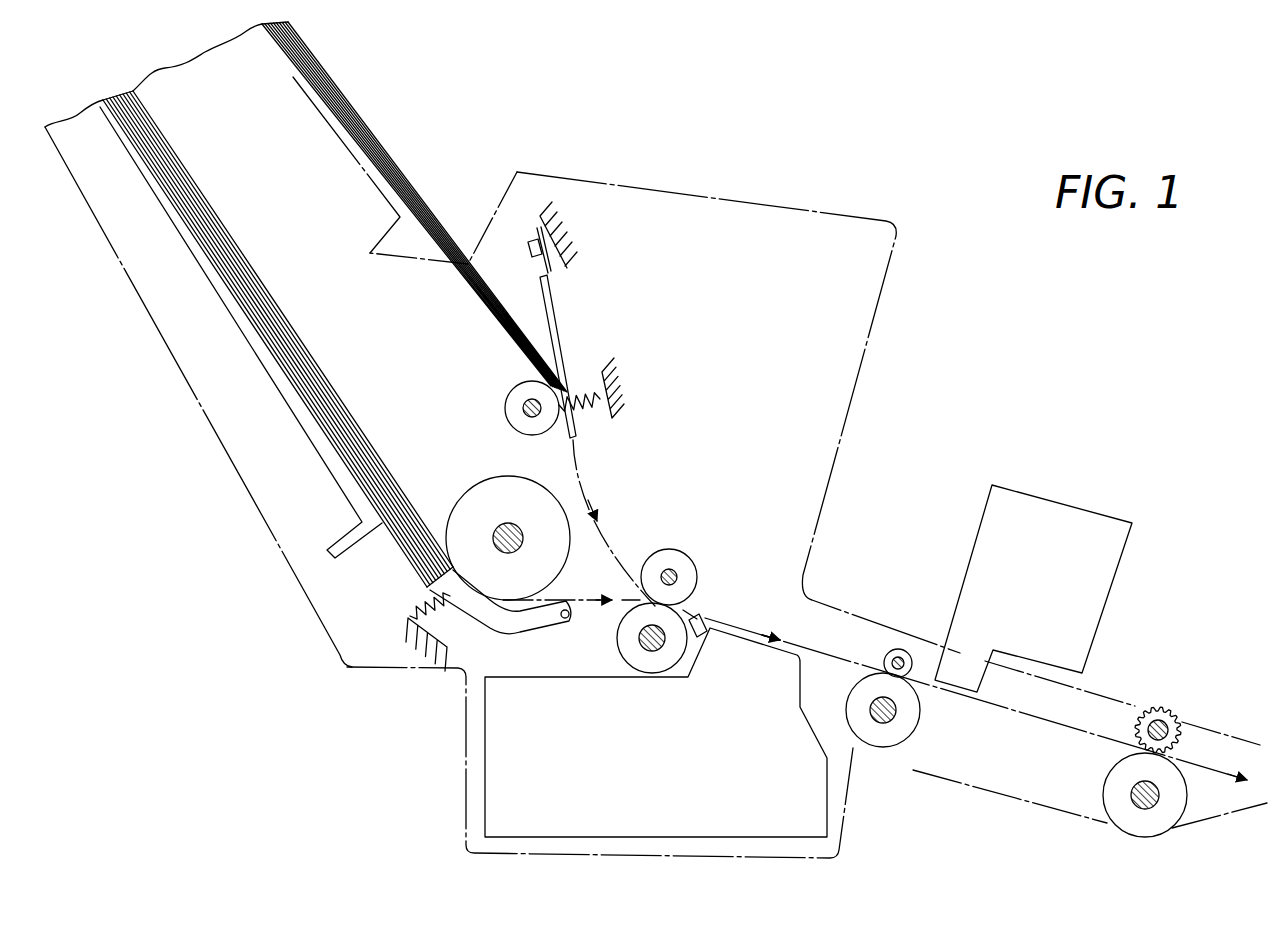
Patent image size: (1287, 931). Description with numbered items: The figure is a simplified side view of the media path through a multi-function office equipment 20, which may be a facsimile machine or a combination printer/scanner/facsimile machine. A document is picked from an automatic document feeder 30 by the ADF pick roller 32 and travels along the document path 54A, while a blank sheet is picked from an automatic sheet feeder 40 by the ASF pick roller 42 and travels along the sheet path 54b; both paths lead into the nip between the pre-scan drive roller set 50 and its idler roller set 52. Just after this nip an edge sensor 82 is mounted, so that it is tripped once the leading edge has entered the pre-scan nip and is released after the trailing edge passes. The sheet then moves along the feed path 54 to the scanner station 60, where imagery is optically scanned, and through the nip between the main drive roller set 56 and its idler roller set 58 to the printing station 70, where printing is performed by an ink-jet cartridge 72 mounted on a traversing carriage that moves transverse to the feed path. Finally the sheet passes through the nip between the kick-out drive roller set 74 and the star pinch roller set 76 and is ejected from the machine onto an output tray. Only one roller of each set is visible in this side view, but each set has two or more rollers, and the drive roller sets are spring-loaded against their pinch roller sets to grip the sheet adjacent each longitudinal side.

The multi-function office equipment 20 is at (908, 190).
The automatic document feeder 30 is at (337, 135).
The ADF pick roller 32 is at (505, 406).
The automatic sheet feeder 40 is at (308, 436).
The ASF pick roller 42 is at (462, 498).
The pre-scan drive roller set 50 is at (632, 666).
The idler roller set 52 is at (672, 548).
The feed path 54 is at (748, 624).
The document path 54A is at (583, 452).
The sheet path 54b is at (600, 604).
The main drive roller set 56 is at (876, 747).
The idler roller set 58 is at (896, 649).
The scanner station 60 is at (758, 843).
The printing station 70 is at (965, 722).
The ink-jet cartridge 72 is at (985, 512).
The kick-out drive roller set 74 is at (1142, 836).
The star pinch roller set 76 is at (1168, 707).
The edge sensor 82 is at (703, 619).